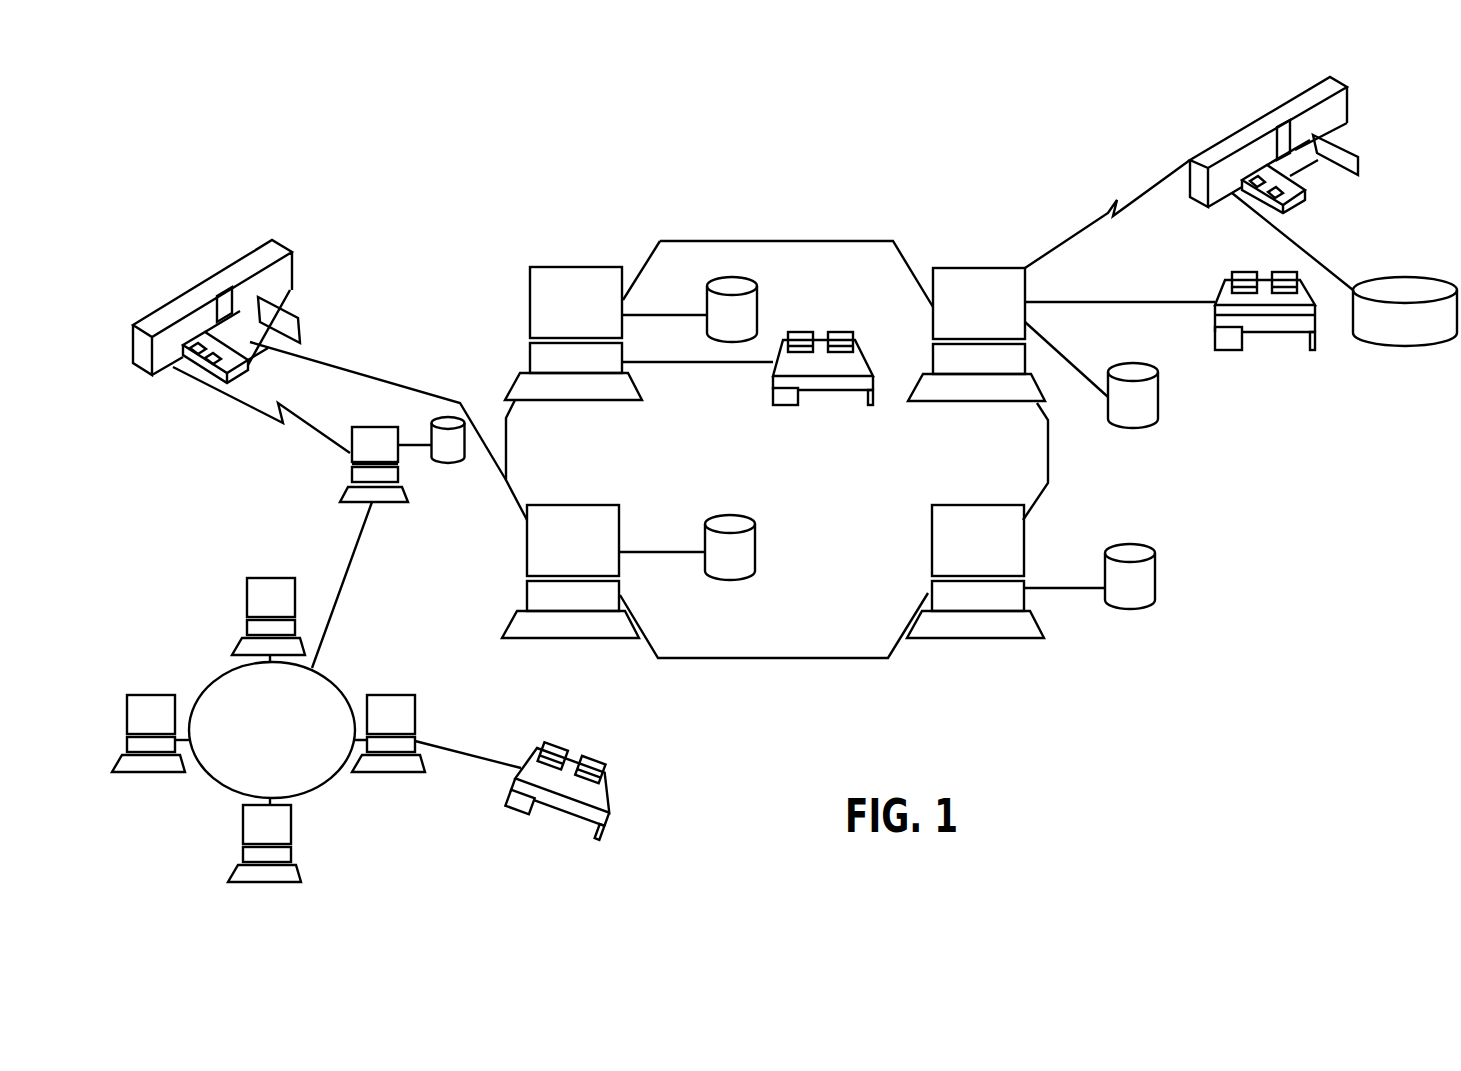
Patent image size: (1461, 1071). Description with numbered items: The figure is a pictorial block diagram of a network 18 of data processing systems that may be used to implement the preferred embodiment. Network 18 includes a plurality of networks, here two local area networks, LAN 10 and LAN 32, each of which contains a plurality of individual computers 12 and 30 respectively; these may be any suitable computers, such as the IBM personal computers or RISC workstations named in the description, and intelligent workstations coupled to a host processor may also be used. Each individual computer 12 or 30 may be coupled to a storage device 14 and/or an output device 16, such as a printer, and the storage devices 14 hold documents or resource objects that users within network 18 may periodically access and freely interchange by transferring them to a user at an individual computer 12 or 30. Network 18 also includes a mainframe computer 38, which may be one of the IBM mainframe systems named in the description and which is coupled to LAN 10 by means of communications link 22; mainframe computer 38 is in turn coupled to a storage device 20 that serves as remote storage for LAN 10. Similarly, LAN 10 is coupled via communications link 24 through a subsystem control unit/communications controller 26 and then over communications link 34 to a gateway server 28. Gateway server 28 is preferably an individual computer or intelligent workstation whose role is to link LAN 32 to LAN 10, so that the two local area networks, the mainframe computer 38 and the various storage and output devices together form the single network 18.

The local area network 10 is at (798, 660).
The individual computer 12 is at (588, 267).
The storage device 14 is at (758, 300).
The output device 16 is at (818, 345).
The network 18 is at (808, 208).
The storage device 20 is at (1422, 282).
The communications link 22 is at (1143, 195).
The communications link 24 is at (382, 373).
The subsystem control unit/communications controller 26 is at (283, 252).
The gateway server 28 is at (378, 430).
The individual computer 30 is at (278, 578).
The local area network 32 is at (212, 785).
The communications link 34 is at (305, 423).
The mainframe computer 38 is at (1267, 122).